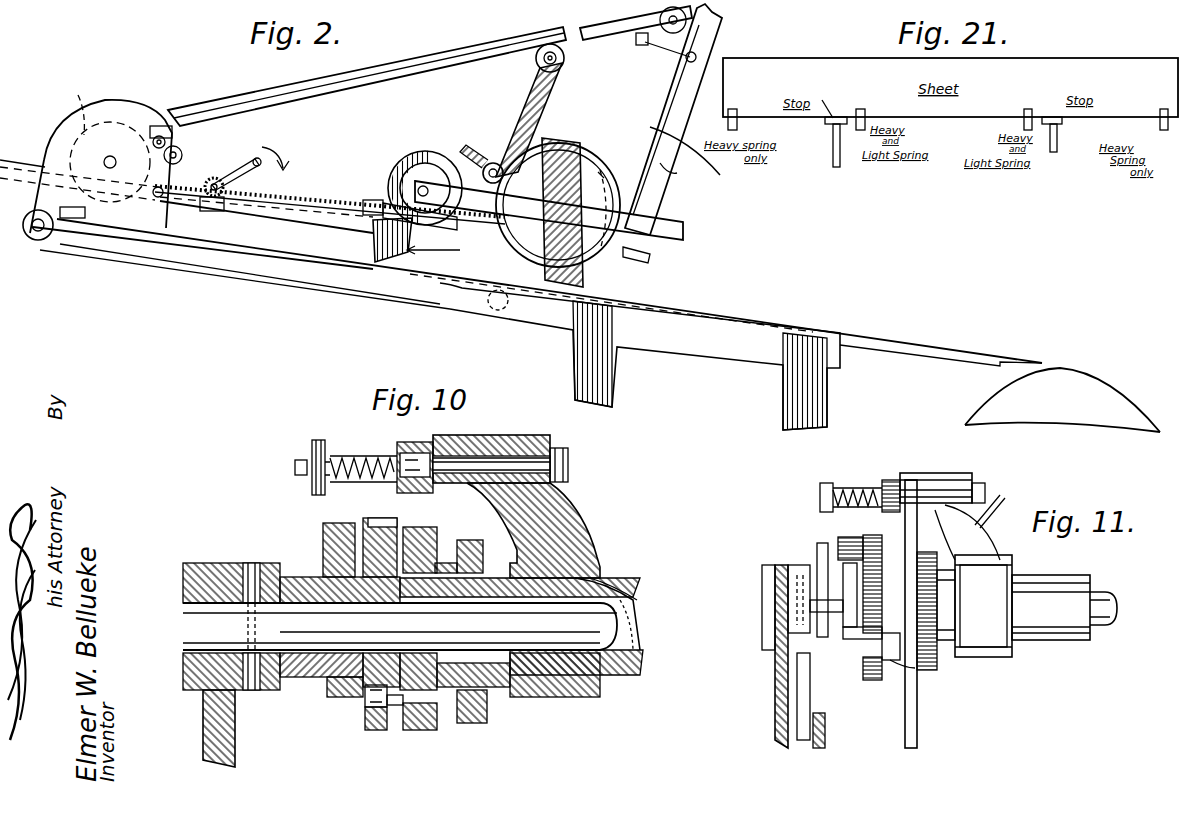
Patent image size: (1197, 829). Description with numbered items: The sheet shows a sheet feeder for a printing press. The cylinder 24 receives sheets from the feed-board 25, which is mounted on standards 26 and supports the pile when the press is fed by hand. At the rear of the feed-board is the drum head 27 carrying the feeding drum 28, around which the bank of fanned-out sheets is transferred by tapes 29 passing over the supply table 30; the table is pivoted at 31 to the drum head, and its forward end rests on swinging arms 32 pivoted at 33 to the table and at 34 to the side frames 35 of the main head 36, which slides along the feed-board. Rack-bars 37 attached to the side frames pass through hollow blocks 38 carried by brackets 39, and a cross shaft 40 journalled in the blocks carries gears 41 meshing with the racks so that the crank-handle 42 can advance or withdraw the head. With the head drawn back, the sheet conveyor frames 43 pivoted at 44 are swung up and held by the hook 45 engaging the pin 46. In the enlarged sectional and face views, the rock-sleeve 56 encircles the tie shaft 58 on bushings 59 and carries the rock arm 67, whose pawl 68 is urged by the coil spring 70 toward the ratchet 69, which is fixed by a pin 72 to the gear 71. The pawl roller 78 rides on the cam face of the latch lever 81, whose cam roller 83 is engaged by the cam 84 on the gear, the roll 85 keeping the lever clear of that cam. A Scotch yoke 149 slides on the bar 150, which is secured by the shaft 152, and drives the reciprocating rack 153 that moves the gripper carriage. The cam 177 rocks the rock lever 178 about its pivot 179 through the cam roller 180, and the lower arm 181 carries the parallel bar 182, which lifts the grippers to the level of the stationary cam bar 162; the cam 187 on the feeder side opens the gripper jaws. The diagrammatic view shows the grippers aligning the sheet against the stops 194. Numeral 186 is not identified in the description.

In FIG. 2, the cylinder 24 is at (1110, 401).
In FIG. 2, the feed-board 25 is at (835, 341).
In FIG. 2, the standards 26 is at (613, 380).
In FIG. 2, the drum head 27 is at (53, 148).
In FIG. 2, the feeding drum 28 is at (80, 112).
In FIG. 2, the tapes 29 is at (162, 118).
In FIG. 2, the supply table 30 is at (352, 68).
In FIG. 2, the pivot 31 is at (183, 155).
In FIG. 2, the swinging arms 32 is at (537, 97).
In FIG. 2, the pivot 33 is at (540, 68).
In FIG. 2, the pivot 34 is at (490, 165).
In FIG. 2, the side frames 35 is at (363, 240).
In FIG. 10, the side frames 35 is at (210, 726).
In FIG. 11, the side frames 35 is at (775, 736).
In FIG. 2, the main head 36 is at (429, 241).
In FIG. 2, the rack-bars 37 is at (333, 200).
In FIG. 2, the hollow blocks 38 is at (196, 211).
In FIG. 2, the brackets 39 is at (198, 210).
In FIG. 2, the cross shaft 40 is at (235, 189).
In FIG. 2, the gears 41 is at (234, 173).
In FIG. 2, the crank-handle 42 is at (290, 164).
In FIG. 2, the sheet conveyor frames 43 is at (663, 183).
In FIG. 2, the pivot 44 is at (634, 263).
In FIG. 2, the hook 45 is at (650, 47).
In FIG. 2, the pin 46 is at (677, 88).
In FIG. 10, the rock-sleeve 56 is at (630, 592).
In FIG. 11, the rock-sleeve 56 is at (1065, 580).
In FIG. 10, the tie shaft 58 is at (600, 625).
In FIG. 11, the tie shaft 58 is at (1097, 605).
In FIG. 2, the bushings 59 is at (680, 173).
In FIG. 10, the bushings 59 is at (578, 596).
In FIG. 10, the rock arm 67 is at (578, 528).
In FIG. 11, the rock arm 67 is at (985, 558).
In FIG. 10, the pawl 68 is at (440, 435).
In FIG. 11, the pawl 68 is at (892, 480).
In FIG. 10, the ratchet 69 is at (413, 527).
In FIG. 11, the ratchet 69 is at (915, 684).
In FIG. 10, the coil spring 70 is at (340, 458).
In FIG. 11, the coil spring 70 is at (845, 484).
In FIG. 10, the gear 71 is at (363, 518).
In FIG. 10, the pin 72 is at (368, 715).
In FIG. 11, the roller 78 is at (986, 583).
In FIG. 11, the latch lever 81 is at (918, 731).
In FIG. 11, the cam roller 83 is at (937, 585).
In FIG. 10, the cam 84 is at (490, 536).
In FIG. 11, the cam 84 is at (937, 621).
In FIG. 10, the roll 85 is at (445, 563).
In FIG. 2, the Scotch yoke 149 is at (570, 157).
In FIG. 2, the bar 150 is at (687, 228).
In FIG. 2, the shaft 152 is at (425, 180).
In FIG. 2, the reciprocating rack 153 is at (360, 196).
In FIG. 2, the stationary cam bar 162 is at (700, 161).
In FIG. 11, the cam 177 is at (846, 630).
In FIG. 11, the rock lever 178 is at (823, 607).
In FIG. 11, the pivot 179 is at (775, 652).
In FIG. 11, the cam roller 180 is at (838, 548).
In FIG. 11, the lower arm 181 is at (800, 695).
In FIG. 11, the parallel bar 182 is at (826, 720).
In FIG. 2, the drum part 186 is at (614, 162).
In FIG. 10, the cam 187 is at (323, 553).
In FIG. 21, the stops 194 is at (840, 118).